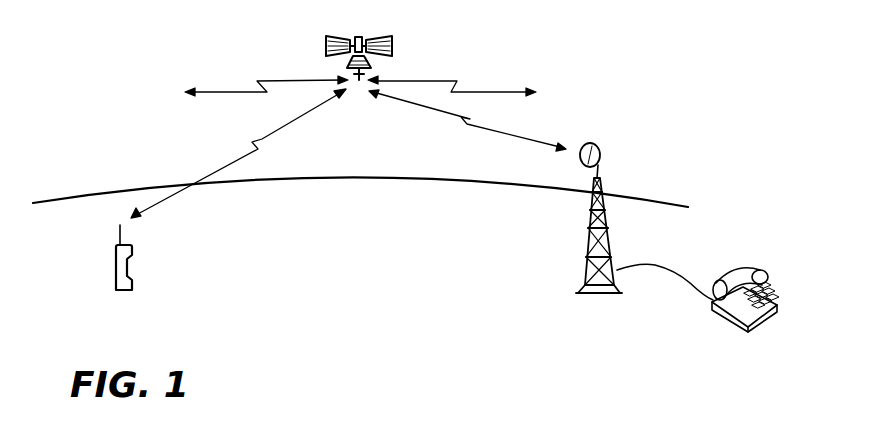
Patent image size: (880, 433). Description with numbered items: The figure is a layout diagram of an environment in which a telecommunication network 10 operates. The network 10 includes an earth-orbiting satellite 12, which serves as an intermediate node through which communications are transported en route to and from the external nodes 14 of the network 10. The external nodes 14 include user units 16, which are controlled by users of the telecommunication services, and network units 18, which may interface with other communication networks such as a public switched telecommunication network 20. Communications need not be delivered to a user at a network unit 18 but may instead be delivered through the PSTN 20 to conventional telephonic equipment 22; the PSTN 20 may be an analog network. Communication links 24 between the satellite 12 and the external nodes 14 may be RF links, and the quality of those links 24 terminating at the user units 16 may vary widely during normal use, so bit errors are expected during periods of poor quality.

The telecommunication network 10 is at (369, 359).
The earth-orbiting satellite 12 is at (379, 35).
The external nodes 14 is at (345, 232).
The user units 16 is at (133, 283).
The network units 18 is at (580, 283).
The public switched telecommunication network (PSTN) 20 is at (673, 274).
The conventional telephonic equipment 22 is at (728, 313).
The communication links 24 is at (227, 90).